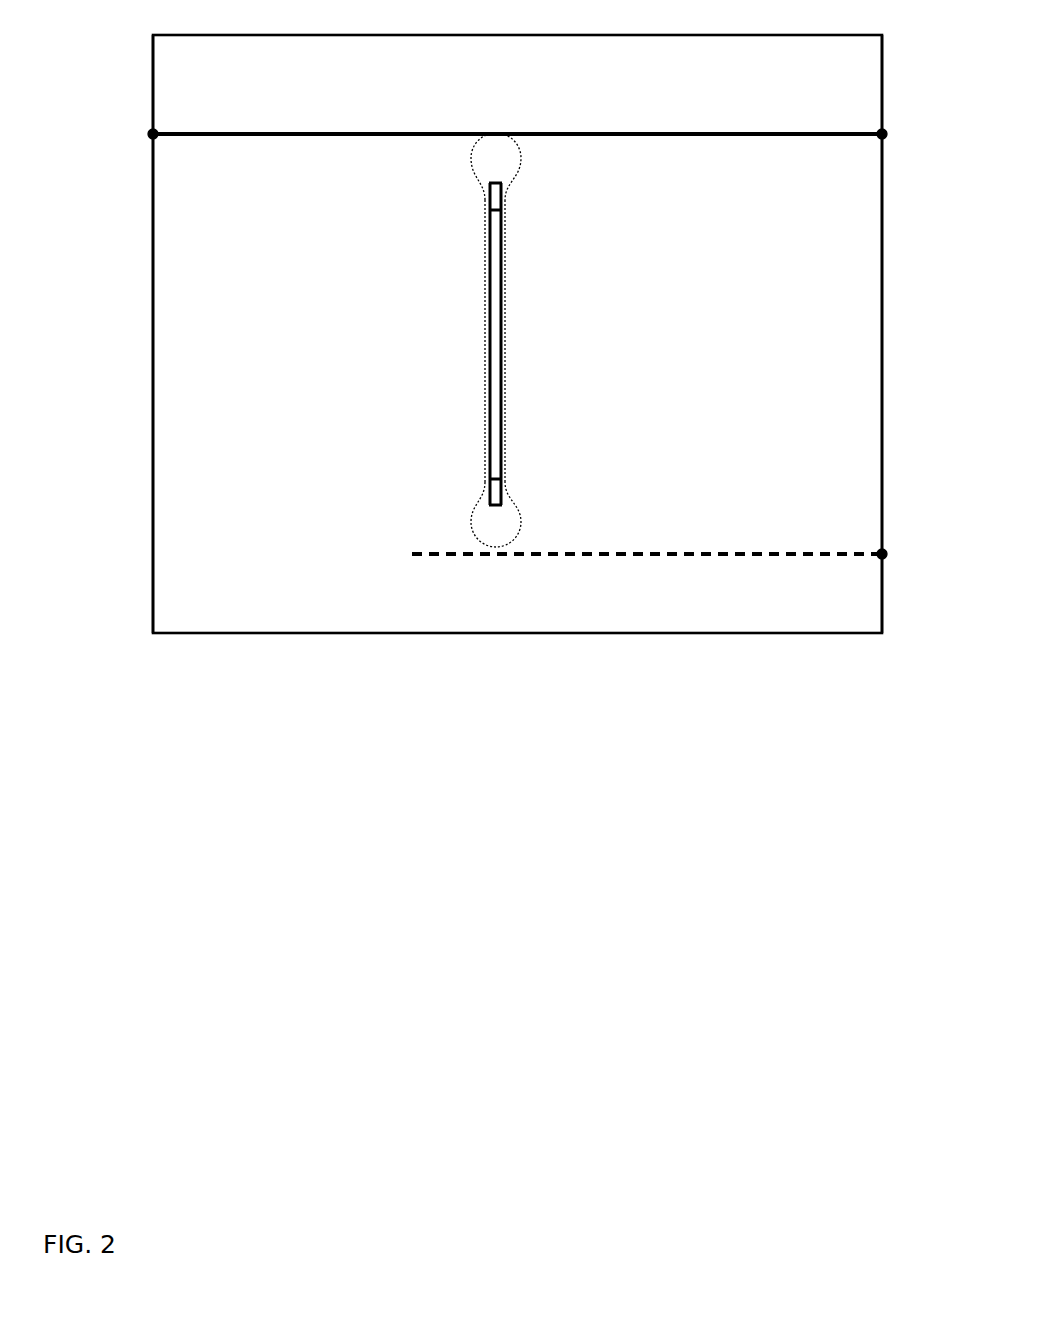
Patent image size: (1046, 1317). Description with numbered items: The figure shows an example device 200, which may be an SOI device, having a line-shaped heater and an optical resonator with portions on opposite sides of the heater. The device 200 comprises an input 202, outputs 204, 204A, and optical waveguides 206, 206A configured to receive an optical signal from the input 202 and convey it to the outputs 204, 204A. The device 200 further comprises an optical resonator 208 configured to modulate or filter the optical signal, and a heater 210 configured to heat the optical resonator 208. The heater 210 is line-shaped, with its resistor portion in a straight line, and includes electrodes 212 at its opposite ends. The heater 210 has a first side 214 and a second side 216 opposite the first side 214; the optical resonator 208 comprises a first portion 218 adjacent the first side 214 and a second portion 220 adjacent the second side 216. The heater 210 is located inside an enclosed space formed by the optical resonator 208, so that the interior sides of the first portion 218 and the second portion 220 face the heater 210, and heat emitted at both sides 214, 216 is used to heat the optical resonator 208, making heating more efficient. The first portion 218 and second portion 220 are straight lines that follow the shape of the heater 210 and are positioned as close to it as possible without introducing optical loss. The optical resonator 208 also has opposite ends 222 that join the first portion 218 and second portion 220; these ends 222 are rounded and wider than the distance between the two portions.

The device 200 is at (445, 35).
The input 202 is at (884, 133).
The output 204 is at (152, 133).
The output 204A is at (884, 553).
The optical waveguide 206 is at (610, 131).
The optical waveguide 206A is at (647, 552).
The optical resonator 208 is at (515, 185).
The heater 210 is at (487, 346).
The electrodes 212 is at (501, 206).
The first side 214 is at (489, 240).
The second side 216 is at (502, 263).
The first portion 218 is at (485, 304).
The second portion 220 is at (507, 348).
The opposite ends 222 is at (495, 340).